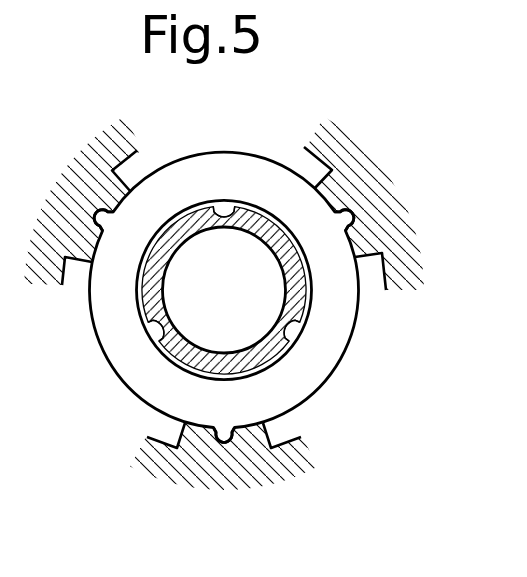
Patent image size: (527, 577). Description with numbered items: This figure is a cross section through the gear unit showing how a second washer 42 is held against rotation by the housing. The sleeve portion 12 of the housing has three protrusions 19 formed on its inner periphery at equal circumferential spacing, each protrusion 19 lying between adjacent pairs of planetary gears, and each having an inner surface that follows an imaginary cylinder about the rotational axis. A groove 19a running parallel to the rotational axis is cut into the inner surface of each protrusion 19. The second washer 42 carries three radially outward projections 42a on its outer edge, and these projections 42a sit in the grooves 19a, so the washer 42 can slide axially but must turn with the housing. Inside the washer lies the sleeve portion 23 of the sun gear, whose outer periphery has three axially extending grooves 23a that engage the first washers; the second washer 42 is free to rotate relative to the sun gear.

The sleeve portion of the housing 12 is at (0, 94).
The protrusion 19 is at (133, 188).
The groove 19a is at (95, 231).
The sleeve portion of the sun gear 23 is at (296, 306).
The groove 23a is at (231, 204).
The second washer 42 is at (208, 157).
The projection 42a is at (100, 209).